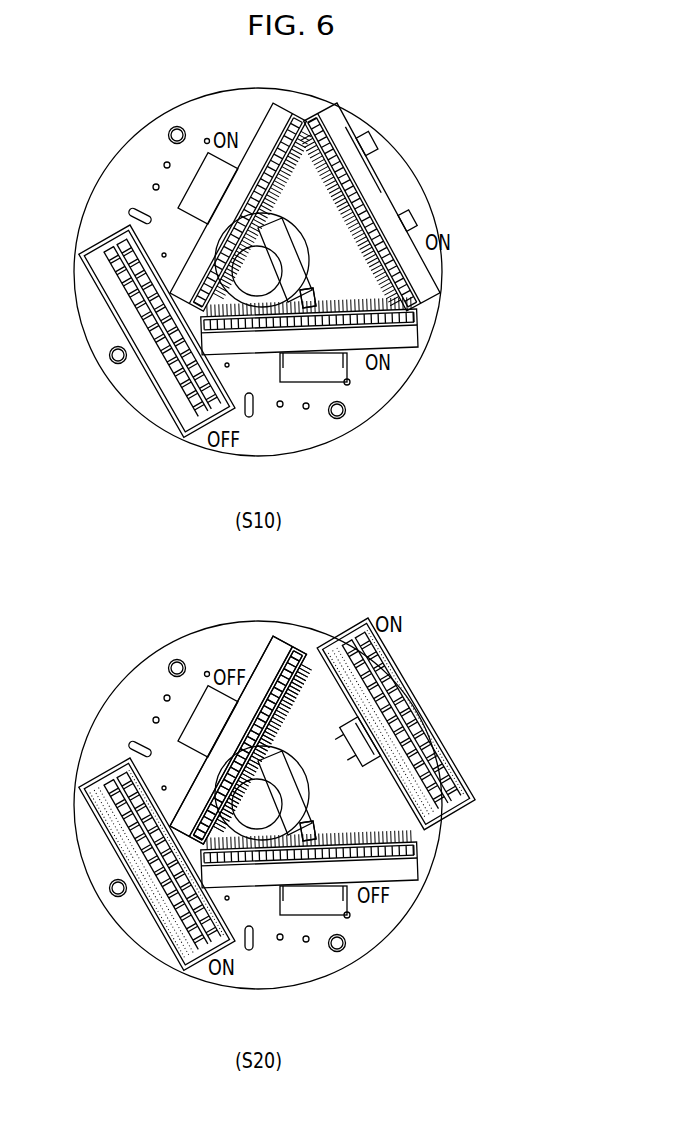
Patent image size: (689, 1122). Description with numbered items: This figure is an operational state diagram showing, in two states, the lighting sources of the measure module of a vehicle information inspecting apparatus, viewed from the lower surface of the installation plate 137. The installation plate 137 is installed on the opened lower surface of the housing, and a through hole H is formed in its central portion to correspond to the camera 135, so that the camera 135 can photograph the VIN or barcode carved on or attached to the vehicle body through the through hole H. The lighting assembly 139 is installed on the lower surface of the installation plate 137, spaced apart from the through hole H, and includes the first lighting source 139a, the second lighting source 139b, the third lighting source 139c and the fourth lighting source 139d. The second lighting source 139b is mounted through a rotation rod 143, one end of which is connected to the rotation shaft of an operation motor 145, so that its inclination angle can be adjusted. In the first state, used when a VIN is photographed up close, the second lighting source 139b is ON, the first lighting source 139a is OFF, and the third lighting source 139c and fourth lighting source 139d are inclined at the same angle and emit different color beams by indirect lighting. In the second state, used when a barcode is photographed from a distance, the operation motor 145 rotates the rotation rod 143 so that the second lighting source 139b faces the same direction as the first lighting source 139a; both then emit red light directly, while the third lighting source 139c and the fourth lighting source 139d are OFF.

The camera 135 is at (253, 268).
The installation plate 137 is at (362, 400).
The lighting assembly 139 is at (254, 992).
The first lighting source 139a is at (173, 395).
The second lighting source 139b is at (380, 197).
The third lighting source 139c is at (257, 133).
The fourth lighting source 139d is at (403, 333).
The rotation rod 143 is at (428, 222).
The operation motor 145 is at (385, 150).
The through hole H is at (320, 300).